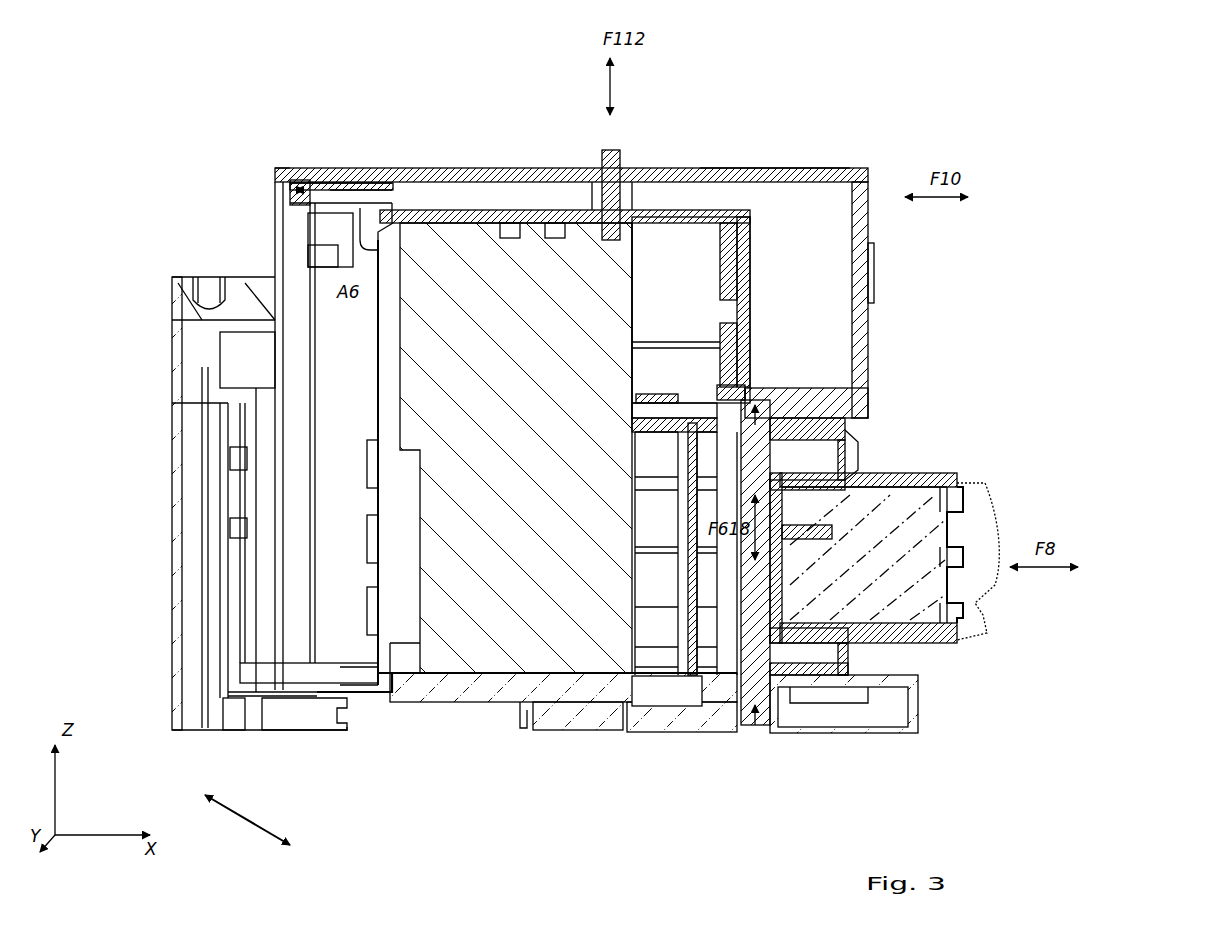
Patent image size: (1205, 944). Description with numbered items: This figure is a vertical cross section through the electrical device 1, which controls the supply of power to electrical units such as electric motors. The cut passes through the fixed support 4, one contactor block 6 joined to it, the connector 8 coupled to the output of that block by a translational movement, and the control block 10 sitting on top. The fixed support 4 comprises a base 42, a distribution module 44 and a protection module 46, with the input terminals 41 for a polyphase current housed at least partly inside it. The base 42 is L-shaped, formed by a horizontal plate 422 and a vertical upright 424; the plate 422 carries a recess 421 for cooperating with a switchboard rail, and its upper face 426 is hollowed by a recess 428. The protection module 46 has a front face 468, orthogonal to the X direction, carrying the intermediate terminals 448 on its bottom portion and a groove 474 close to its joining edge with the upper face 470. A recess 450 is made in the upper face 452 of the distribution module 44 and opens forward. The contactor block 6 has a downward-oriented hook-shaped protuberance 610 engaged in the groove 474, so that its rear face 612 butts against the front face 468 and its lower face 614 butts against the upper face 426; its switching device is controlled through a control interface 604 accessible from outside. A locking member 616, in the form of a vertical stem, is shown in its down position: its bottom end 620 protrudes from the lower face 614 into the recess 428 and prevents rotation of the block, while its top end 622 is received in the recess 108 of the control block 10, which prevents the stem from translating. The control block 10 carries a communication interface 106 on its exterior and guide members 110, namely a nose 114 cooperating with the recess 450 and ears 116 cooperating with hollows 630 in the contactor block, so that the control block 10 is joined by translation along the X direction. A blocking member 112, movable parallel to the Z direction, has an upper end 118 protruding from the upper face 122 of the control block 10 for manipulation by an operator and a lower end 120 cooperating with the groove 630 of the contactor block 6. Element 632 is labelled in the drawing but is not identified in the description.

The electrical device 1 is at (1110, 100).
The fixed support 4 is at (247, 824).
The contactor block 6 is at (462, 260).
The connector 8 is at (884, 558).
The control block 10 is at (845, 168).
The input terminals 41 is at (204, 290).
The base 42 is at (232, 700).
The distribution module 44 is at (295, 677).
The protection module 46 is at (350, 692).
The communication interface 106 is at (882, 275).
The recess 108 is at (770, 460).
The guide members 110 is at (290, 230).
The blocking member 112 is at (604, 150).
The nose 114 is at (292, 192).
The ears 116 is at (718, 393).
The upper end 118 is at (620, 155).
The lower end 120 is at (650, 235).
The upper face 122 is at (772, 166).
The recess 421 is at (485, 712).
The plate 422 is at (680, 720).
The upright 424 is at (176, 532).
The upper face 426 is at (600, 705).
The recess 428 is at (750, 700).
The intermediate terminals 448 is at (390, 474).
The recess 450 is at (306, 180).
The upper face 452 is at (282, 162).
The front face 468 is at (378, 432).
The upper face 470 is at (360, 186).
The groove 474 is at (386, 182).
The control interface 604 is at (552, 232).
The protuberance 610 is at (425, 220).
The rear face 612 is at (400, 430).
The lower face 614 is at (557, 664).
The locking member 616 is at (432, 212).
The bottom end 620 is at (778, 735).
The top end 622 is at (750, 402).
The groove 630 is at (608, 232).
The corner 632 is at (745, 388).